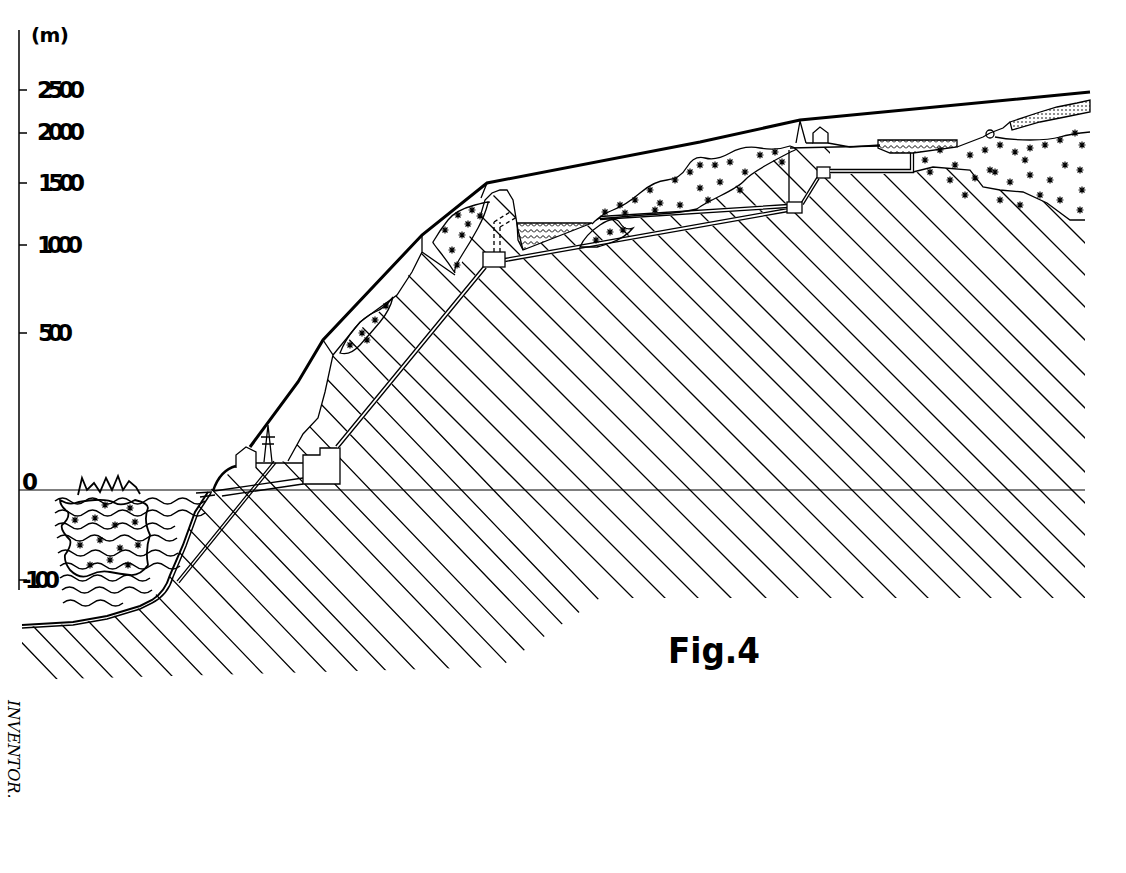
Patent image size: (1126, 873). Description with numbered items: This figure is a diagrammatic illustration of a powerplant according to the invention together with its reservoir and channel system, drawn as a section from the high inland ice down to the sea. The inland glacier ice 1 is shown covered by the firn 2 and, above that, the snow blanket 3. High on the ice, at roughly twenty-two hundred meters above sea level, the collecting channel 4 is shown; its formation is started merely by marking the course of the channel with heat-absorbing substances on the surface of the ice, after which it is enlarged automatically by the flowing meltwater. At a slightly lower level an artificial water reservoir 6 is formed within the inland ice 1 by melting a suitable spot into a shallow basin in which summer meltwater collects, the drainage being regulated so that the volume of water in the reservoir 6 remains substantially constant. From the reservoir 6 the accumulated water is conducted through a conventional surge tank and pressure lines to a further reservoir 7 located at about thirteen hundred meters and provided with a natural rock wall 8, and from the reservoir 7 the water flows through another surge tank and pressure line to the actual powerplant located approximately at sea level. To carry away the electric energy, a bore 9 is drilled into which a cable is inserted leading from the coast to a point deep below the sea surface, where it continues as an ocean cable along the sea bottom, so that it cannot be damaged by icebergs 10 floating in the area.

The inland glacier ice 1 is at (723, 165).
The firn 2 is at (1033, 128).
The snow blanket 3 is at (1063, 111).
The collecting channel 4 is at (994, 128).
The artificial water reservoir 6 is at (919, 140).
The further reservoir 7 is at (556, 222).
The natural rock wall 8 is at (500, 186).
The bore 9 is at (213, 489).
The icebergs 10 is at (119, 478).